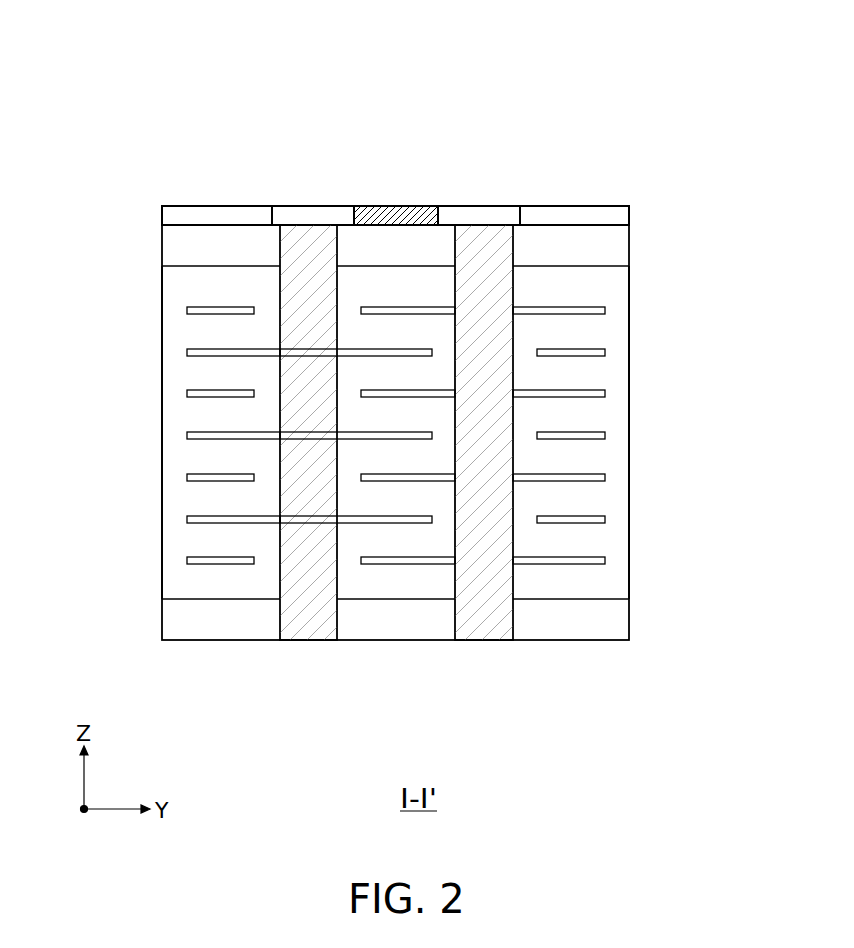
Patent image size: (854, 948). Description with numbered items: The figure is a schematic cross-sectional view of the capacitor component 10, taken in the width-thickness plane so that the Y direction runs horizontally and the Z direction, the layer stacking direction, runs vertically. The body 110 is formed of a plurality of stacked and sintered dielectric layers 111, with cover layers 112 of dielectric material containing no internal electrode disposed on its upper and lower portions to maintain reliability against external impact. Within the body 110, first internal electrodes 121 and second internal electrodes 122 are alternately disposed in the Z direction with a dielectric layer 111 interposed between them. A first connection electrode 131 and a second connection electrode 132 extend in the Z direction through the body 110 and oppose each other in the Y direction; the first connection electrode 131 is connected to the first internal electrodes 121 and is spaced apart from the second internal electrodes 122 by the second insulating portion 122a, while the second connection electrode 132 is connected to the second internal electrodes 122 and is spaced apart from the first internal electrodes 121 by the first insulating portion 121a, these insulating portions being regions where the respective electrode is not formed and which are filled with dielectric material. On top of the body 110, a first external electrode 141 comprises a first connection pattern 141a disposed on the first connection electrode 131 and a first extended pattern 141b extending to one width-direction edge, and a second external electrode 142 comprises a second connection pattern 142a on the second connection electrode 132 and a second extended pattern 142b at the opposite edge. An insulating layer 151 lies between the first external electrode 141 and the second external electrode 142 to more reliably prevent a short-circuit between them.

The capacitor component 10 is at (385, 49).
The body 110 is at (417, 238).
The dielectric layer 111 is at (590, 330).
The cover layer 112 is at (610, 247).
The first internal electrode 121 is at (205, 349).
The first insulating portion 121a is at (521, 349).
The second internal electrode 122 is at (588, 305).
The second insulating portion 122a is at (265, 308).
The first connection electrode 131 is at (308, 625).
The second connection electrode 132 is at (482, 625).
The first external electrode 141 is at (333, 120).
The first connection pattern 141a is at (297, 206).
The first extended pattern 141b is at (202, 206).
The second external electrode 142 is at (623, 120).
The second connection pattern 142a is at (490, 206).
The second extended pattern 142b is at (585, 206).
The insulating layer 151 is at (370, 206).